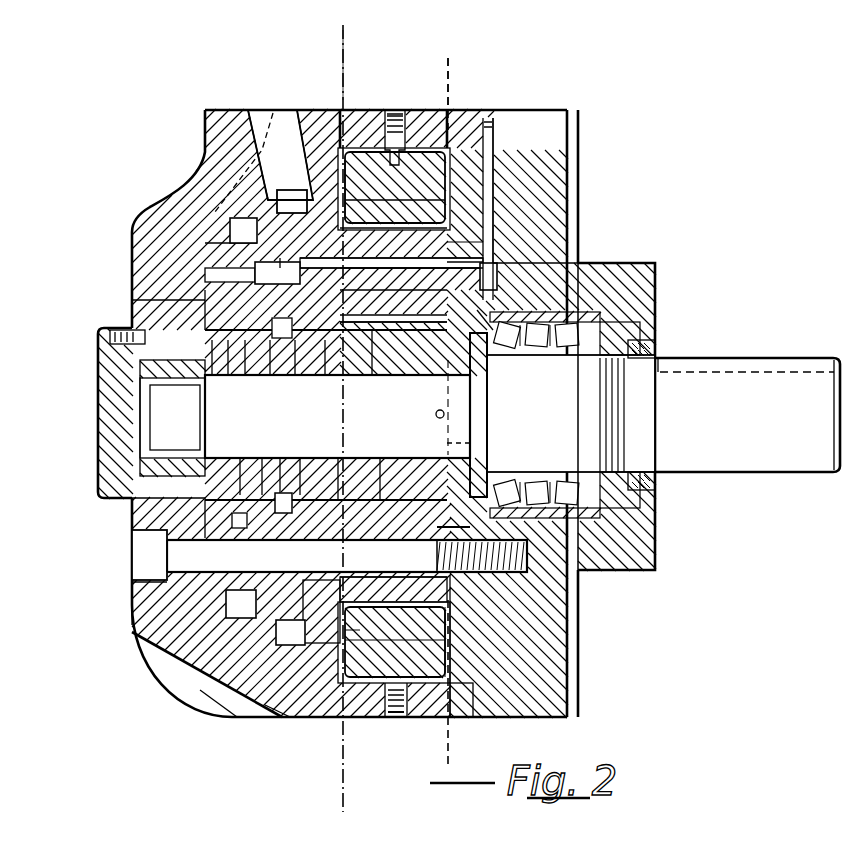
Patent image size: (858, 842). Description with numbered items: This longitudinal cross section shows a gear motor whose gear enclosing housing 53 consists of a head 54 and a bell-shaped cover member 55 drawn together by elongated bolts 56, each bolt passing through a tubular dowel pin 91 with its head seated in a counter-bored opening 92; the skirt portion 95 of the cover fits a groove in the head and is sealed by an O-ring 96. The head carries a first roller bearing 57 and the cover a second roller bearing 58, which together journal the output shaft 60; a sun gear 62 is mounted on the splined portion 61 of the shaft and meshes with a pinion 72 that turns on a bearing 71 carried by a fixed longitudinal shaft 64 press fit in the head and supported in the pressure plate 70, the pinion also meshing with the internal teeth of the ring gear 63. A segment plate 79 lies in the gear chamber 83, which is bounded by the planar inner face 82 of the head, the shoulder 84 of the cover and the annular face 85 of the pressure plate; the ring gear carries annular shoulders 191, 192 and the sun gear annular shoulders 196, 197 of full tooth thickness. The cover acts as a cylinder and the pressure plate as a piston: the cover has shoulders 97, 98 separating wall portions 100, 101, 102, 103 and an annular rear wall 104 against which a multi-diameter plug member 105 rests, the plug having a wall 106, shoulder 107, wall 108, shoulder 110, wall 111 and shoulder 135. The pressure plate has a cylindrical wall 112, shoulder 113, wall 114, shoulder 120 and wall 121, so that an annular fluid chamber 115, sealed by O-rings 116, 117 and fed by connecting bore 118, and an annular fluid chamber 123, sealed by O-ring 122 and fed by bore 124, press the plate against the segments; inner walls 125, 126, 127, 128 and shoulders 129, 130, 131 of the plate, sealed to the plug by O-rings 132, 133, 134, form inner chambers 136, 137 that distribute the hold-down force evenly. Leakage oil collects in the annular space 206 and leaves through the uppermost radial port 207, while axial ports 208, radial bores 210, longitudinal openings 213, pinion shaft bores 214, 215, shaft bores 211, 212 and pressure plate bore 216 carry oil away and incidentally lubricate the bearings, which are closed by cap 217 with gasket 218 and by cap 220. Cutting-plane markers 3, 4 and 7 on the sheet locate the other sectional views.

The section line 3- 3 is at (300, 55).
The section line 4- 4 is at (372, 85).
The section line 7- 7 is at (423, 100).
The gear enclosing housing 53 is at (584, 126).
The head 54 is at (580, 196).
The cover member 55 is at (150, 262).
The elongated bolts 56 is at (148, 552).
The first roller bearing 57 is at (560, 350).
The second roller bearing 58 is at (116, 484).
The output shaft 60 is at (806, 388).
The splined portion 61 is at (462, 416).
The sun gear 62 is at (420, 347).
The ring gear 63 is at (404, 122).
The fixed longitudinal shaft 64 is at (498, 276).
The pressure plate 70 is at (212, 243).
The bearing 71 is at (452, 244).
The pinion 72 is at (408, 216).
The segment plate 79 is at (440, 590).
The inner face 82 is at (452, 628).
The gear chamber 83 is at (414, 722).
The shoulder 84 is at (342, 170).
The annular face 85 is at (358, 208).
The tubular dowel pin 91 is at (445, 527).
The counter-bored opening 92 is at (145, 584).
The skirt portion 95 is at (447, 100).
The O-ring 96 is at (498, 716).
The shoulder 97 is at (272, 714).
The shoulder 98 is at (240, 658).
The cylindrical inner wall portion 100 is at (400, 717).
The cylindrical inner wall portion 101 is at (285, 718).
The cylindrical inner wall portion 102 is at (236, 718).
The cylindrical inner wall portion 103 is at (134, 612).
The annular rear wall 104 is at (134, 527).
The multi-diameter plug member 105 is at (135, 330).
The cylindrical wall 106 is at (238, 500).
The annular shoulder 107 is at (218, 355).
The cylindrical wall 108 is at (262, 462).
The annular shoulder 110 is at (270, 362).
The wall 111 is at (268, 470).
The cylindrical wall 112 is at (325, 716).
The annular shoulder 113 is at (340, 570).
The intermediate cylindrical wall 114 is at (314, 588).
The annular fluid chamber 115 is at (282, 188).
The O-ring 116 is at (292, 240).
The O-ring 117 is at (277, 273).
The connecting bore 118 is at (262, 108).
The annular shoulder 120 is at (287, 618).
The third cylindrical wall 121 is at (240, 588).
The O-ring 122 is at (214, 568).
The annular fluid chamber 123 is at (228, 232).
The bore 124 is at (273, 110).
The cylindrical wall 125 is at (217, 307).
The cylindrical wall 126 is at (255, 352).
The cylindrical wall 127 is at (293, 350).
The cylindrical wall 128 is at (330, 364).
The shoulder 129 is at (240, 365).
The shoulder 130 is at (372, 360).
The shoulder 131 is at (380, 462).
The O-ring 132 is at (207, 302).
The O-ring 133 is at (282, 318).
The O-ring 134 is at (295, 496).
The shoulder 135 is at (338, 462).
The annular chamber 136 is at (300, 462).
The annular chamber 137 is at (243, 462).
The annular shoulder 191 is at (382, 628).
The annular shoulder 192 is at (448, 640).
The annular shoulder 196 is at (326, 338).
The annular shoulder 197 is at (480, 313).
The annular space 206 is at (418, 717).
The radial port 207 is at (383, 118).
The longitudinal axial port 208 is at (497, 196).
The radial bore 210 is at (494, 146).
The longitudinal bore 211 is at (190, 408).
The transverse bore 212 is at (470, 443).
The longitudinal opening 213 is at (582, 265).
The longitudinal bore 214 is at (452, 262).
The transverse bore 215 is at (405, 255).
The longitudinal bore 216 is at (281, 262).
The cap 217 is at (650, 312).
The gasket 218 is at (662, 342).
The cap 220 is at (114, 372).